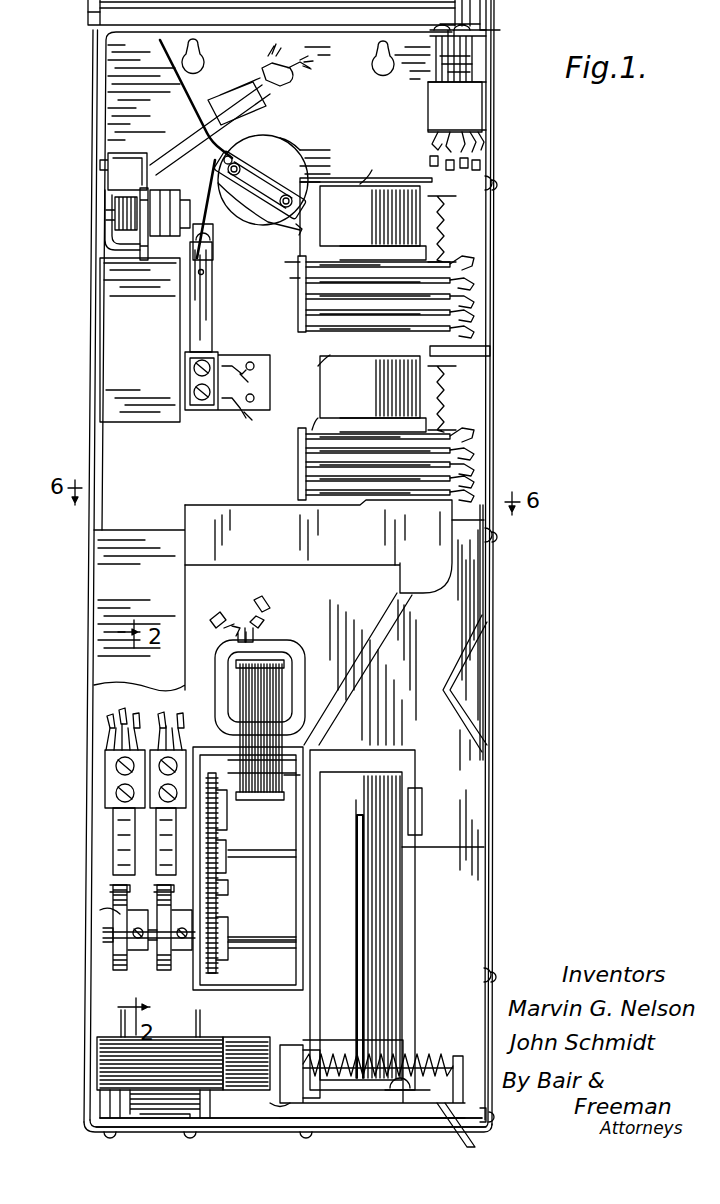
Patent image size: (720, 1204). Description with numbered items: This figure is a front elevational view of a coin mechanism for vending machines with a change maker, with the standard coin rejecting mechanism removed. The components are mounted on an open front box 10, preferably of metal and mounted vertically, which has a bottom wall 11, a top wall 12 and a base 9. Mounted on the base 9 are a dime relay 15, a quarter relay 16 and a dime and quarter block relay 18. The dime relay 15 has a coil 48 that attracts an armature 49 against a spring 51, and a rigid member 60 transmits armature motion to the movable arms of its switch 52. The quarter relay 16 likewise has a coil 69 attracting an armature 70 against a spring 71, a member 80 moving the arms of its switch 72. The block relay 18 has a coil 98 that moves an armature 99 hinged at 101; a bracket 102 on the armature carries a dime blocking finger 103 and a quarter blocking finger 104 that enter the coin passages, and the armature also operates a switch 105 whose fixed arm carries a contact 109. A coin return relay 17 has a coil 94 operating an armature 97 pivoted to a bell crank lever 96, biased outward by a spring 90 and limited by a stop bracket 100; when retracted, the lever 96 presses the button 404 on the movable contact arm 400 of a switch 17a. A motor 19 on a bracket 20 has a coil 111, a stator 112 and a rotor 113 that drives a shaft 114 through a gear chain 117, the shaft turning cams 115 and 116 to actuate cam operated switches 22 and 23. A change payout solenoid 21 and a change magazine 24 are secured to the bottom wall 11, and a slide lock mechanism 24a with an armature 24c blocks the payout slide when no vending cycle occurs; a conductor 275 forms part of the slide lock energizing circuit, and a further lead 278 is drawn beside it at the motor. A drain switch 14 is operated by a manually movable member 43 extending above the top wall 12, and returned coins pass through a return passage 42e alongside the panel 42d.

The base 9 is at (338, 55).
The open front box 10 is at (221, 469).
The bottom wall 11 is at (322, 1130).
The top wall 12 is at (212, 27).
The drain switch 14 is at (457, 97).
The dime relay 15 is at (405, 389).
The quarter relay 16 is at (366, 219).
The coin return relay 17 is at (140, 340).
The switch 17a is at (278, 86).
The dime and quarter block relay 18 is at (290, 140).
The motor 19 is at (295, 648).
The bracket 20 is at (298, 752).
The change payout solenoid 21 is at (261, 1023).
The cam operated switch 22 is at (186, 752).
The cam operated switch 23 is at (108, 776).
The change magazine 24 is at (395, 945).
The slide lock mechanism 24a is at (262, 1105).
The armature 24c is at (262, 1050).
The side panel 42d is at (452, 652).
The return passage 42e is at (90, 624).
The manually movable member 43 is at (500, 17).
The coil 48 is at (320, 366).
The armature 49 is at (310, 432).
The spring 51 is at (446, 400).
The switch 52 is at (360, 580).
The rigid member 60 is at (300, 455).
The coil 69 is at (360, 184).
The armature 70 is at (276, 262).
The spring 71 is at (446, 236).
The switch 72 is at (404, 320).
The member 80 is at (277, 282).
The spring 90 is at (108, 228).
The coil 94 is at (165, 425).
The bell crank lever 96 is at (112, 172).
The armature 97 is at (148, 250).
The coil 98 is at (300, 152).
The armature 99 is at (278, 155).
The stop bracket 100 is at (208, 180).
The hinge 101 is at (312, 240).
The bracket 102 is at (224, 160).
The dime blocking finger 103 is at (226, 242).
The quarter blocking finger 104 is at (178, 72).
The switch 105 is at (212, 312).
The contact 109 is at (204, 275).
The coil 111 is at (292, 680).
The stator 112 is at (270, 690).
The rotor 113 is at (288, 785).
The shaft 114 is at (252, 942).
The cam 115 is at (152, 893).
The cam 116 is at (122, 910).
The gear chain 117 is at (228, 890).
The conductor 275 is at (240, 620).
The wire lead 278 is at (210, 620).
The movable contact arm 400 is at (210, 106).
The button 404 is at (178, 135).